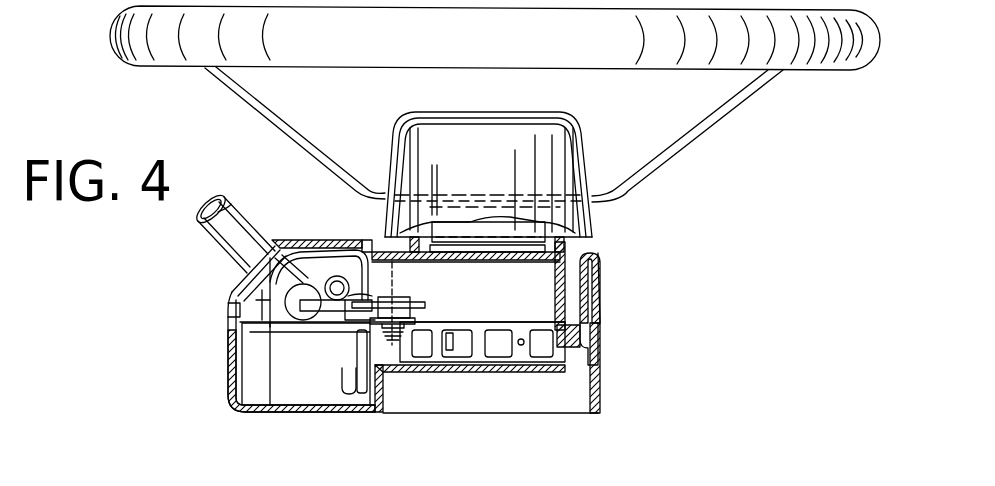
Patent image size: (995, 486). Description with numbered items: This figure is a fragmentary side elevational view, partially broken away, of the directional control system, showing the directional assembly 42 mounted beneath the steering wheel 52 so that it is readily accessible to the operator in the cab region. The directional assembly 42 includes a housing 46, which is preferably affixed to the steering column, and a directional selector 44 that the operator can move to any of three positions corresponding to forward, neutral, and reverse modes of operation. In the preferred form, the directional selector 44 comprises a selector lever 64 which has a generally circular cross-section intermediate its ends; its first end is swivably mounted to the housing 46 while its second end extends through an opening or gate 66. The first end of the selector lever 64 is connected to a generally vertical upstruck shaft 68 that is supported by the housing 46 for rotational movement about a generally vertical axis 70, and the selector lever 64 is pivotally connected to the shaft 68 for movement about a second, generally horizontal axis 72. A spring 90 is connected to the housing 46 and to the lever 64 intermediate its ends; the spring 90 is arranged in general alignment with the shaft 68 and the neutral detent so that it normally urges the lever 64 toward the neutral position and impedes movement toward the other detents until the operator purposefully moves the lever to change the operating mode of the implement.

The directional assembly 42 is at (598, 400).
The directional selector 44 is at (262, 222).
The housing 46 is at (605, 335).
The steering wheel 52 is at (812, 50).
The selector lever 64 is at (318, 300).
The gate 66 is at (262, 306).
The shaft 68 is at (423, 312).
The vertical axis 70 is at (393, 275).
The horizontal axis 72 is at (348, 360).
The spring 90 is at (343, 383).